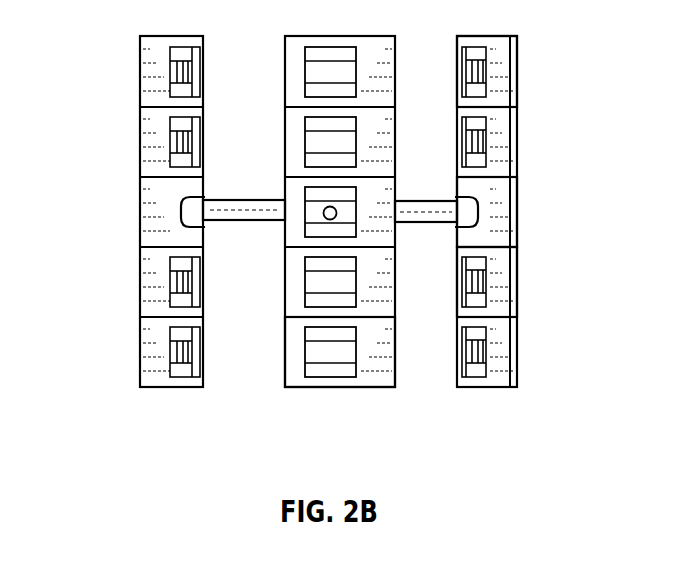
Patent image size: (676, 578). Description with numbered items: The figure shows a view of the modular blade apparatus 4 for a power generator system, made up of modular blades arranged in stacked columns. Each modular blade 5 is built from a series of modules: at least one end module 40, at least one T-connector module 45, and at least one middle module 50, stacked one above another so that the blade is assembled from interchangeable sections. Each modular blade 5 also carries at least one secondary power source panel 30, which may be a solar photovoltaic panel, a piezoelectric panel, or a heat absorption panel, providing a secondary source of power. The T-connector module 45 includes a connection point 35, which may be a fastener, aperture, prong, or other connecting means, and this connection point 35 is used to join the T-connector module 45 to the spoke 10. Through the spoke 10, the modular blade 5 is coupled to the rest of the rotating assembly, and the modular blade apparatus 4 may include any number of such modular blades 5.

The modular blade apparatus 4 is at (164, 439).
The modular blade 5 is at (89, 36).
The spoke 10 is at (262, 222).
The secondary power source panel 30 is at (330, 362).
The connection point 35 is at (330, 206).
The end module 40 is at (528, 36).
The T-connector module 45 is at (528, 177).
The middle module 50 is at (528, 247).